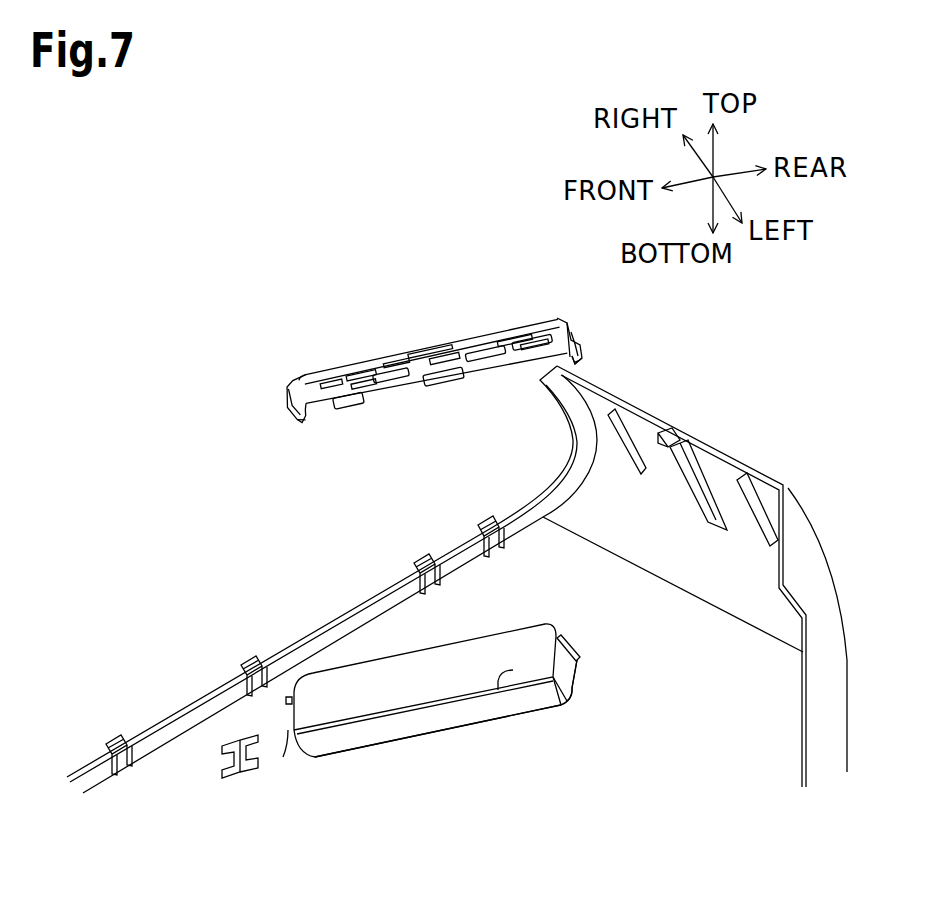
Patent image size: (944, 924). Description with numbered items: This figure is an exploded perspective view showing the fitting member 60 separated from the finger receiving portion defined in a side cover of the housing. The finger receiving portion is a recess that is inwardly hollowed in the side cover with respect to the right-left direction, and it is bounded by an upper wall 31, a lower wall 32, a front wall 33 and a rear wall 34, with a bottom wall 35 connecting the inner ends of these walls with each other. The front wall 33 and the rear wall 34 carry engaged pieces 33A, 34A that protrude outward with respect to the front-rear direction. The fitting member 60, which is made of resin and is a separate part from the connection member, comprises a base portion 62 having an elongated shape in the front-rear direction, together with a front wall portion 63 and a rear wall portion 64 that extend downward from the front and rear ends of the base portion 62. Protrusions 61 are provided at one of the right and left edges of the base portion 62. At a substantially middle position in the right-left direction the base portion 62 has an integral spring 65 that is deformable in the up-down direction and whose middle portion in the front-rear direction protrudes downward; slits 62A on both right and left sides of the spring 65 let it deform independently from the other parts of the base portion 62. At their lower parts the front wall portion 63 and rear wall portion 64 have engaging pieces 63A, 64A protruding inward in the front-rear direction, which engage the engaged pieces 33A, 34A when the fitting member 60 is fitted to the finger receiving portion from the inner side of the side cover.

The fitting member 60 is at (505, 306).
The protrusions 61 is at (477, 370).
The base portion 62 is at (392, 372).
The slits 62A is at (363, 382).
The front wall portion 63 is at (287, 397).
The engaging piece 63A is at (297, 417).
The rear wall portion 64 is at (587, 347).
The engaging piece 64A is at (583, 364).
The spring 65 is at (350, 403).
The upper wall 31 is at (522, 625).
The lower wall 32 is at (397, 731).
The front wall 33 is at (283, 757).
The engaged piece 33A is at (287, 697).
The rear wall 34 is at (570, 672).
The engaged piece 34A is at (578, 646).
The bottom wall 35 is at (498, 690).